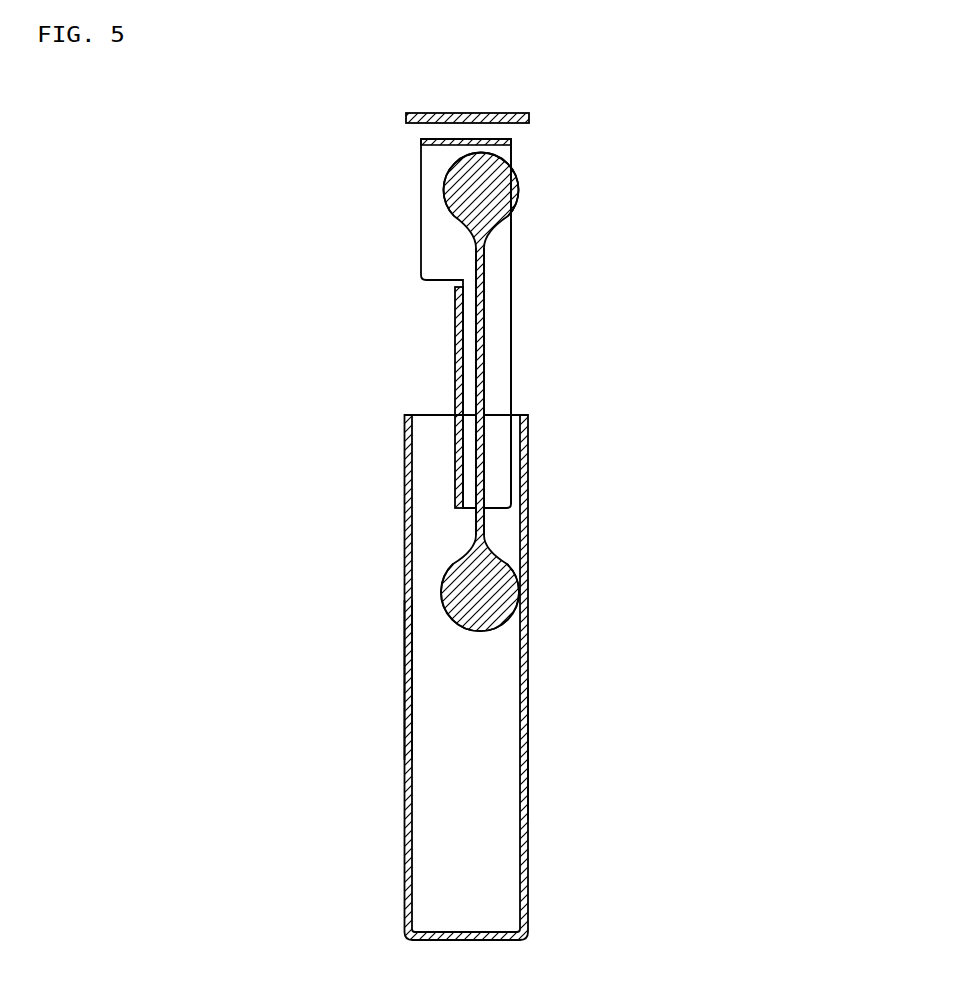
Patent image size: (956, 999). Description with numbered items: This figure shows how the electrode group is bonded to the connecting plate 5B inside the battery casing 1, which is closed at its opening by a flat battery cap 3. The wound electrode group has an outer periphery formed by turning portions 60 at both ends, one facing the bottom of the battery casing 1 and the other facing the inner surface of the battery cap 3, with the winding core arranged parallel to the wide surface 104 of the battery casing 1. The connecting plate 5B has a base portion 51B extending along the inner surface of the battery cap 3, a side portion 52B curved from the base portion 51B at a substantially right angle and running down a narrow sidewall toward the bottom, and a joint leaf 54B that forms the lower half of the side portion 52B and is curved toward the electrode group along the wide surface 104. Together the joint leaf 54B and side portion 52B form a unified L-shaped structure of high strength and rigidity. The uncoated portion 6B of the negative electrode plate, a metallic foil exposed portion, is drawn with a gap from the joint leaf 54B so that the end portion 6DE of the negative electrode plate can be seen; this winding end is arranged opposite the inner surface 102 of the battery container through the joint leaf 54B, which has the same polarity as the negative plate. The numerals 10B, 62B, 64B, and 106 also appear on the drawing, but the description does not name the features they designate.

The battery casing 1 is at (528, 835).
The battery cap 3 is at (508, 115).
The connecting plate 5B is at (430, 228).
The uncoated portion 6B is at (480, 350).
The end portion of the negative electrode plate 6DE is at (471, 377).
The gap 10B is at (468, 483).
The base portion 51B is at (421, 162).
The side portion 52B is at (505, 240).
The joint leaf 54B is at (455, 323).
The turning portions 60 is at (508, 162).
The shaft portion 62B is at (482, 360).
The shaft portion 64B is at (477, 435).
The inner surface of the battery container 102 is at (412, 692).
The wide surface of the battery casing 104 is at (407, 665).
The outer surface of tube 106 is at (523, 752).